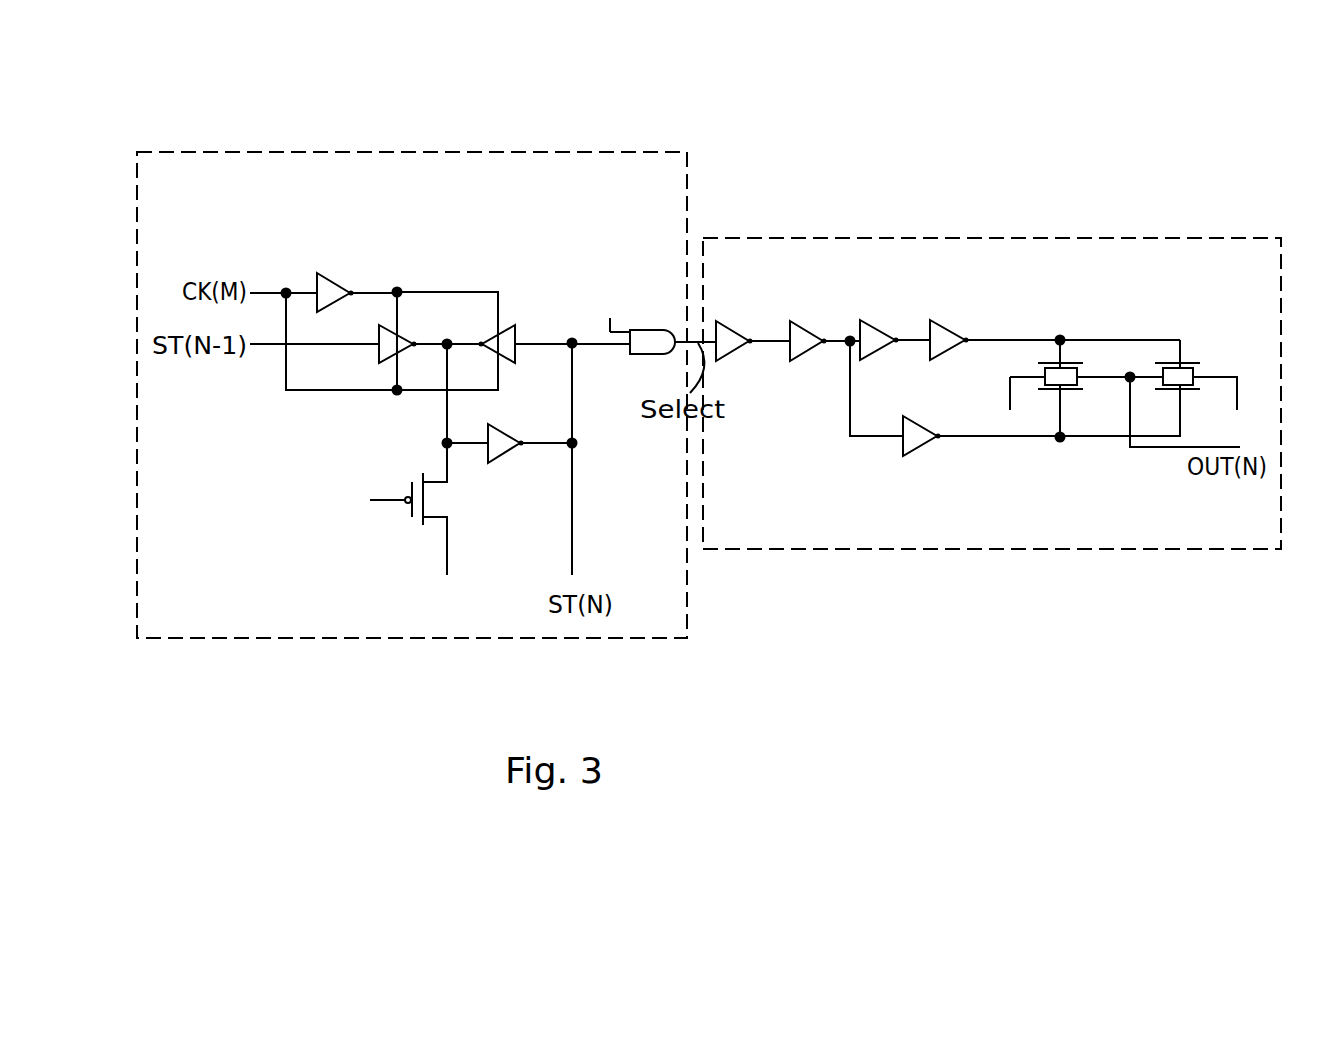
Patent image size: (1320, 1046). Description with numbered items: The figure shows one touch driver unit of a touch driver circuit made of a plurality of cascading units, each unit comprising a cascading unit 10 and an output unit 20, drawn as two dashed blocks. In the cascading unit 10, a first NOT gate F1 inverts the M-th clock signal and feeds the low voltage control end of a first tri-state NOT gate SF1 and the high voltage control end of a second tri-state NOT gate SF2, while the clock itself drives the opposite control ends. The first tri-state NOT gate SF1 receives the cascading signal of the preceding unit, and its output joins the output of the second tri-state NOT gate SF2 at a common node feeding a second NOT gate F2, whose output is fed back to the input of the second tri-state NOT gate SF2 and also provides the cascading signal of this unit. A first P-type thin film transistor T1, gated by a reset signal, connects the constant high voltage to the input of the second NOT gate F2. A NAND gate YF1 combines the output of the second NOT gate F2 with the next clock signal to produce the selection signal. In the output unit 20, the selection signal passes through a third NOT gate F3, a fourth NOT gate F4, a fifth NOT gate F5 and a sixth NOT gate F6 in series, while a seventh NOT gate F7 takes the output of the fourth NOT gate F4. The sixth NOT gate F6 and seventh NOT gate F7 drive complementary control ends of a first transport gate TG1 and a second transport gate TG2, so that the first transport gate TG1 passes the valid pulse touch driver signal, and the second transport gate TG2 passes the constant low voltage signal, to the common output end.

The cascading unit 10 is at (412, 150).
The output unit 20 is at (992, 549).
The first NOT gate F1 is at (328, 276).
The second NOT gate F2 is at (510, 453).
The third NOT gate F3 is at (753, 353).
The fourth NOT gate F4 is at (825, 353).
The fifth NOT gate F5 is at (895, 352).
The sixth NOT gate F6 is at (1055, 352).
The seventh NOT gate F7 is at (1015, 412).
The first tri-state NOT gate SF1 is at (374, 353).
The second tri-state NOT gate SF2 is at (510, 358).
The NAND gate YF1 is at (651, 335).
The first P-type thin film transistor T1 is at (382, 525).
The first transport gate TG1 is at (1076, 389).
The second transport gate TG2 is at (1207, 384).